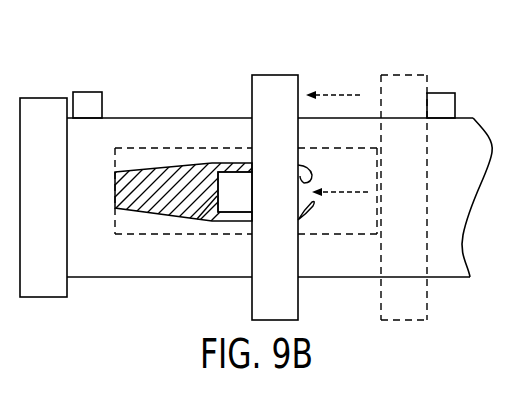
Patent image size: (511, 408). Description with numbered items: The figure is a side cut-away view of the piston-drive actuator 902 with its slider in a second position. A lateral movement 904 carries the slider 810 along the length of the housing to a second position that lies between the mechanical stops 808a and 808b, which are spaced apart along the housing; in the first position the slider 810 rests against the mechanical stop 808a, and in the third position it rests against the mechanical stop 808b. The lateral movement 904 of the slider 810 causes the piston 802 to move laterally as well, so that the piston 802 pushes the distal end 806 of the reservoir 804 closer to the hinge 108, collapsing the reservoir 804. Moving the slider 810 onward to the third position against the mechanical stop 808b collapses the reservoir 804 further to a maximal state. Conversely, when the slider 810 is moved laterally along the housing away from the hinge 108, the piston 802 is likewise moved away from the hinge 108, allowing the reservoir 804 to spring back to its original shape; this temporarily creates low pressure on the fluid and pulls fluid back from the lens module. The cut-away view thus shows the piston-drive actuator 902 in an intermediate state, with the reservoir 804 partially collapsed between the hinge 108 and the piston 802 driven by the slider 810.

The hinge 108 is at (43, 97).
The piston 802 is at (233, 181).
The reservoir 804 is at (180, 172).
The distal end 806 is at (200, 205).
The mechanical stop 808a is at (447, 92).
The mechanical stop 808b is at (88, 91).
The slider 810 is at (277, 74).
The piston-drive actuator 902 is at (130, 57).
The lateral movement 904 is at (339, 90).